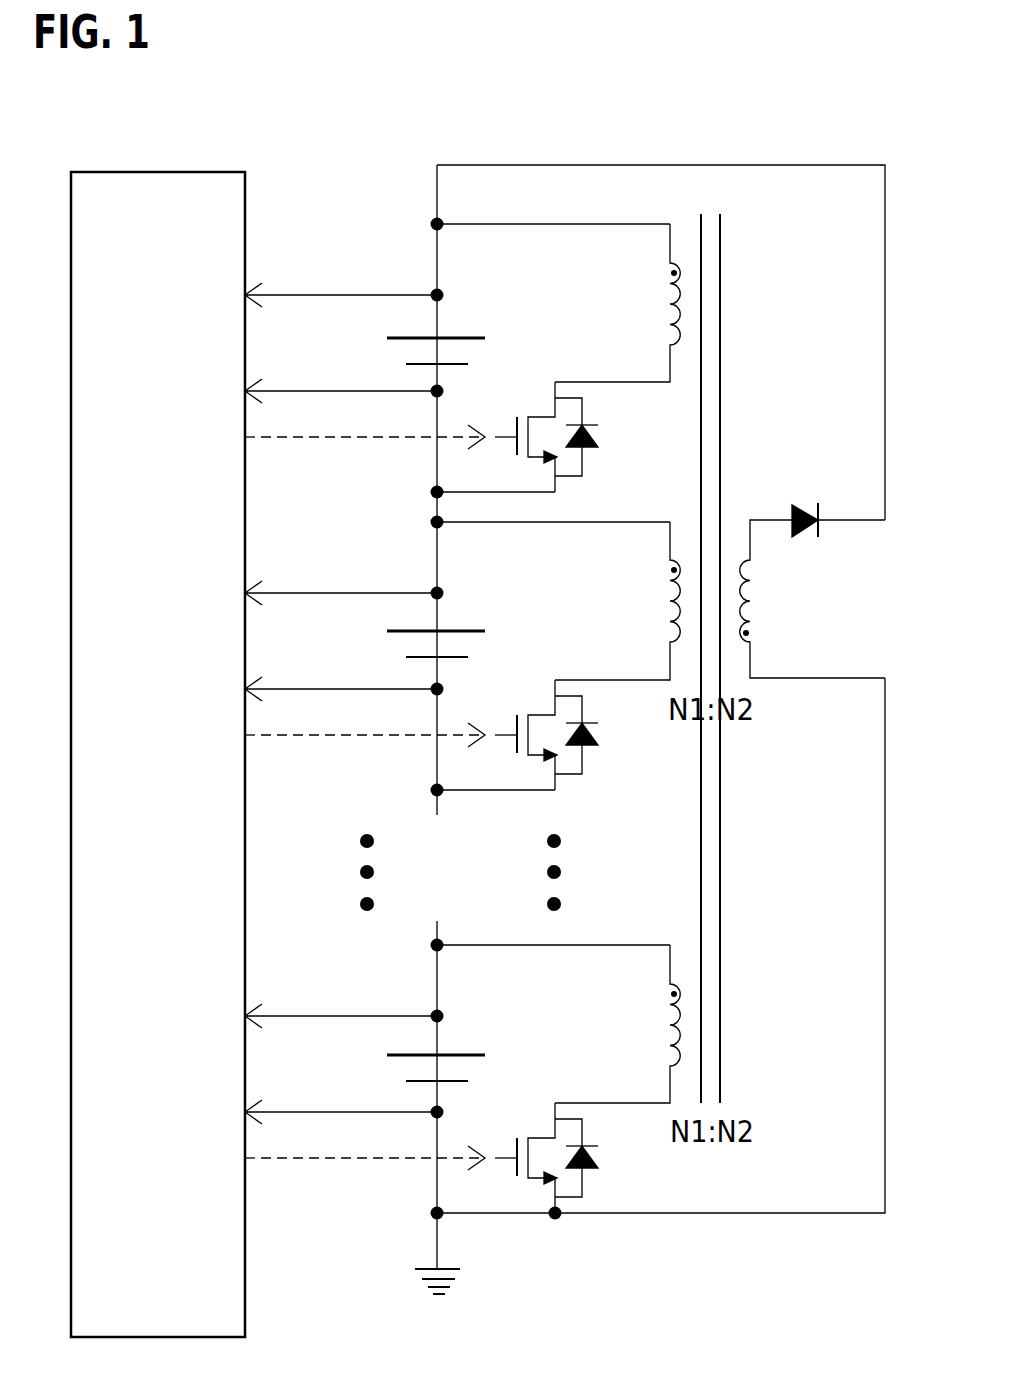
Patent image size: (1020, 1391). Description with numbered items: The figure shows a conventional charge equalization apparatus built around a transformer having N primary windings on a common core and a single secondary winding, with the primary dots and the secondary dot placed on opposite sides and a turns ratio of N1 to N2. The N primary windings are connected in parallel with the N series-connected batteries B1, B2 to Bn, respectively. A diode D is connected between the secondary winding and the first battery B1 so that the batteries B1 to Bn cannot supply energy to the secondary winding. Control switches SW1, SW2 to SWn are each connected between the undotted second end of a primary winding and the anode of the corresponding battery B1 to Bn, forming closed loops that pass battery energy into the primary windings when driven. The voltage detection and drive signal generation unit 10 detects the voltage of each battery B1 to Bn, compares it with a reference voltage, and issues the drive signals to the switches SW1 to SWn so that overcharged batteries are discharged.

The voltage detection and drive signal generation unit 10 is at (157, 172).
The first battery B1 is at (413, 348).
The second battery B2 is at (412, 644).
The n-th battery Bn is at (418, 1067).
The first control switch SW1 is at (541, 434).
The second control switch SW2 is at (546, 733).
The n-th control switch SWn is at (546, 1155).
The diode D is at (838, 503).